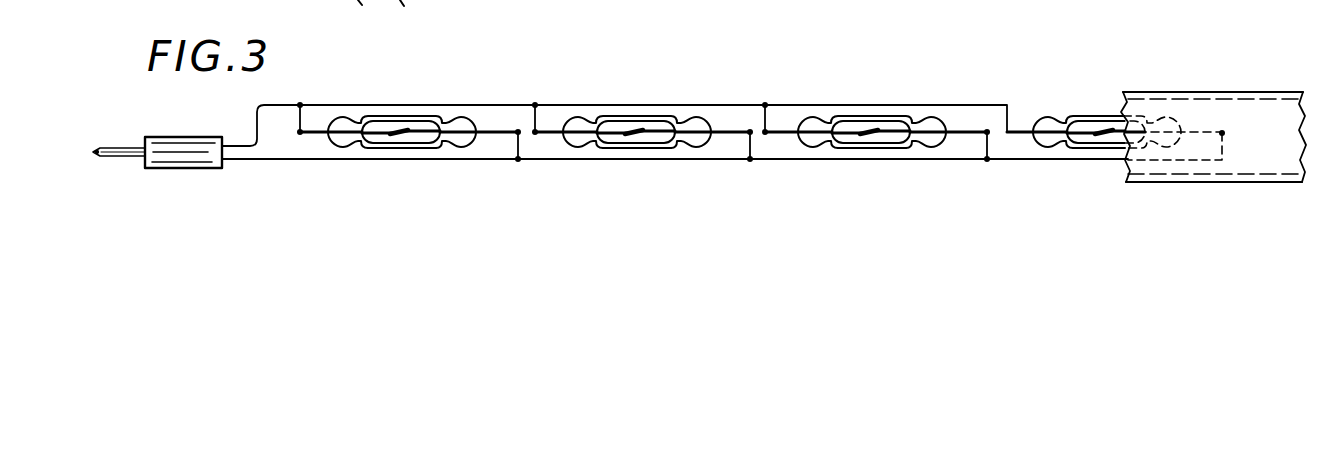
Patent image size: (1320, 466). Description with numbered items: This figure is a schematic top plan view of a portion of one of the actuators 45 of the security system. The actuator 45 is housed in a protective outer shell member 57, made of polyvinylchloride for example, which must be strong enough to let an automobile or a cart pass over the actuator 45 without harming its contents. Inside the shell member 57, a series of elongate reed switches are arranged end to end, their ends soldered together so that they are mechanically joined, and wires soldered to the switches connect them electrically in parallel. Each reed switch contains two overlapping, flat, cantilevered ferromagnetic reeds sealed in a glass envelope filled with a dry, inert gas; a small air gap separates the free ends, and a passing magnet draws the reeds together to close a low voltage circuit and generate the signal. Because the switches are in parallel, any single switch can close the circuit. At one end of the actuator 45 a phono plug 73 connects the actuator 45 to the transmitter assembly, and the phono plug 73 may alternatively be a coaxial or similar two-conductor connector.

The actuator 45 is at (1287, 93).
The protective outer shell member 57 is at (1267, 92).
The phono plug 73 is at (174, 167).